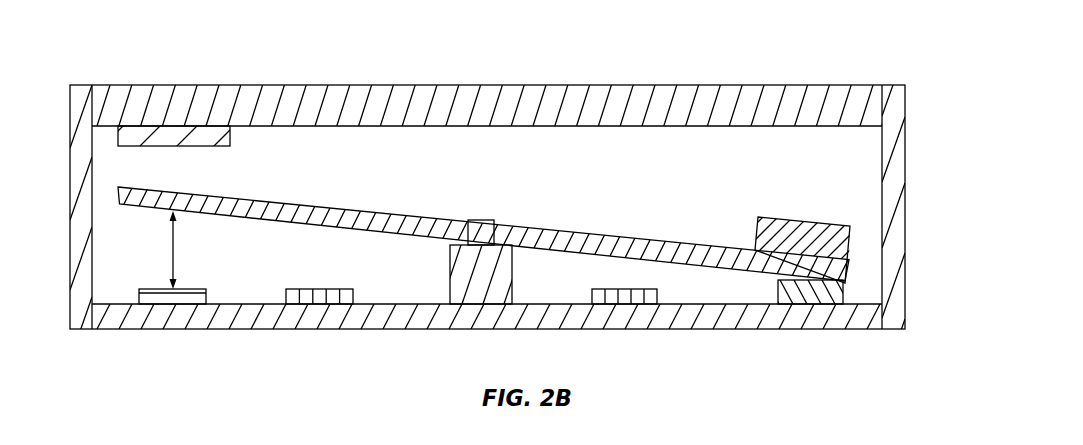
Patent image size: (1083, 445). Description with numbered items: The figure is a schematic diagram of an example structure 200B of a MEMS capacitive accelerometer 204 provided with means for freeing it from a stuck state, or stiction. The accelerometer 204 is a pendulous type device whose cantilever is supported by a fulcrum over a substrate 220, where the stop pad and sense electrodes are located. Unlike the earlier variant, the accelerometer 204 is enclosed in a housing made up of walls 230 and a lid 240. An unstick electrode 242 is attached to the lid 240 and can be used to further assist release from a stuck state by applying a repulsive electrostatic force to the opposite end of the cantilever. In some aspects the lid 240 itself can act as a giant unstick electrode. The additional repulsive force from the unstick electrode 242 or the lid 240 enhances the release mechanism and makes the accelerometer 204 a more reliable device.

The example structure 200B is at (166, 19).
The MEMS capacitive accelerometer 204 is at (872, 50).
The substrate 220 is at (253, 302).
The walls 230 is at (905, 232).
The lid 240 is at (445, 127).
The unstick electrode 242 is at (231, 135).